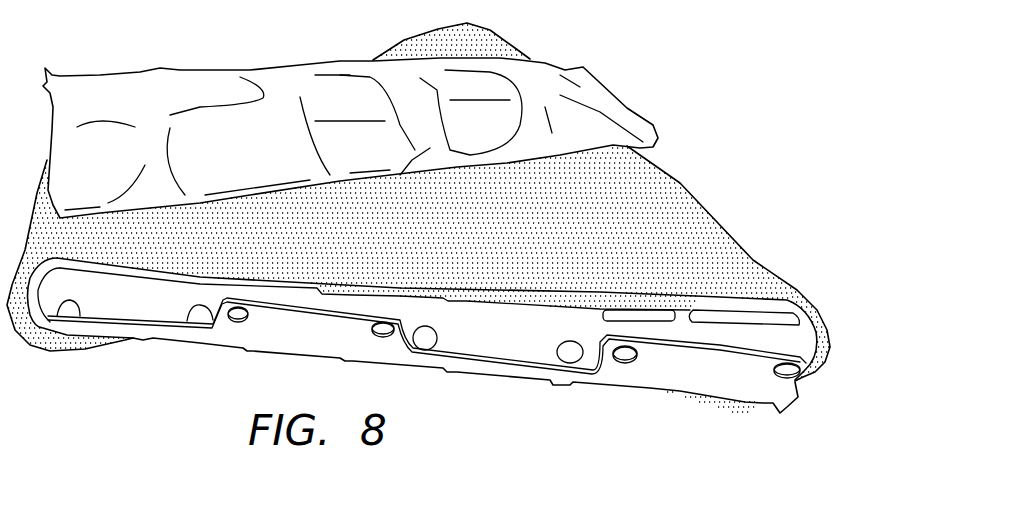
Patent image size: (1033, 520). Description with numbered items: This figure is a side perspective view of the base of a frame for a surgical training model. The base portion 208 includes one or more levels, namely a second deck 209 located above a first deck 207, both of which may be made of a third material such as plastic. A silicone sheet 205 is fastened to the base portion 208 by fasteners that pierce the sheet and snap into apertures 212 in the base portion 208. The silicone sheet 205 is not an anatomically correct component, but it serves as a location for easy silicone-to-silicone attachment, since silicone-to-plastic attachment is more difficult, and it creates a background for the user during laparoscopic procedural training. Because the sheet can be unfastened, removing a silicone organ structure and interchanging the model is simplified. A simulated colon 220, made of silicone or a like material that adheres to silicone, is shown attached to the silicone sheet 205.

The silicone sheet 205 is at (660, 217).
The first deck 207 is at (740, 383).
The base portion 208 is at (770, 200).
The second deck 209 is at (797, 332).
The apertures 212 is at (800, 375).
The simulated colon 220 is at (610, 108).